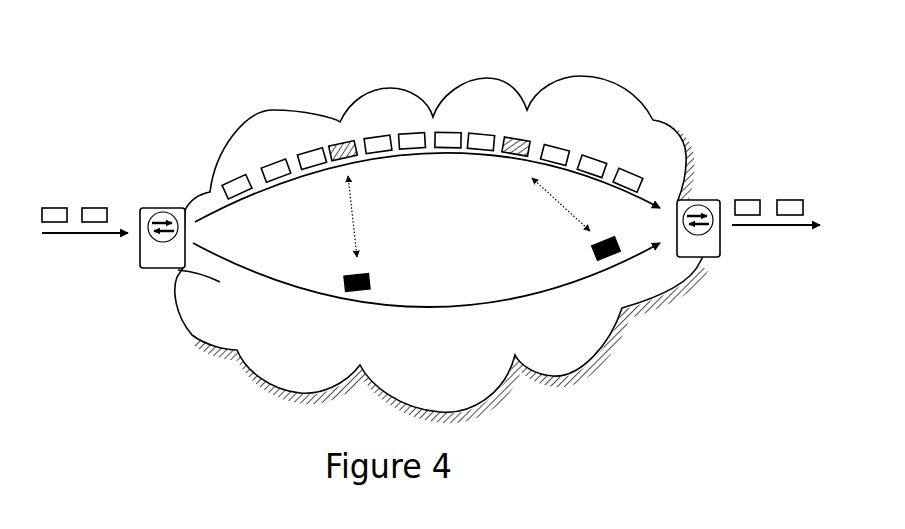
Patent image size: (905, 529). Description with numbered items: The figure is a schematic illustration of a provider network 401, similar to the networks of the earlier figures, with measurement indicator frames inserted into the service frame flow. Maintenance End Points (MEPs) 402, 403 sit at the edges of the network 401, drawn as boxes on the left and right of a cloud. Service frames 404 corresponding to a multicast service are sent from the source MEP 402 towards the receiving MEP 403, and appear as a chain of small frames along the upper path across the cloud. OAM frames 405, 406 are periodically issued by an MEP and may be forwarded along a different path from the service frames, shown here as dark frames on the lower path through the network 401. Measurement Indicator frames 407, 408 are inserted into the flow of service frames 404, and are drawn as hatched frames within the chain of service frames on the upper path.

The network 401 is at (122, 105).
The source Maintenance End Point (MEP) 402 is at (163, 266).
The receiving Maintenance End Point (MEP) 403 is at (743, 243).
The service frames 404 is at (213, 200).
The OAM frame 405 is at (353, 291).
The OAM frame 406 is at (582, 255).
The measurement indicator frame 407 is at (347, 135).
The measurement indicator frame 408 is at (520, 138).